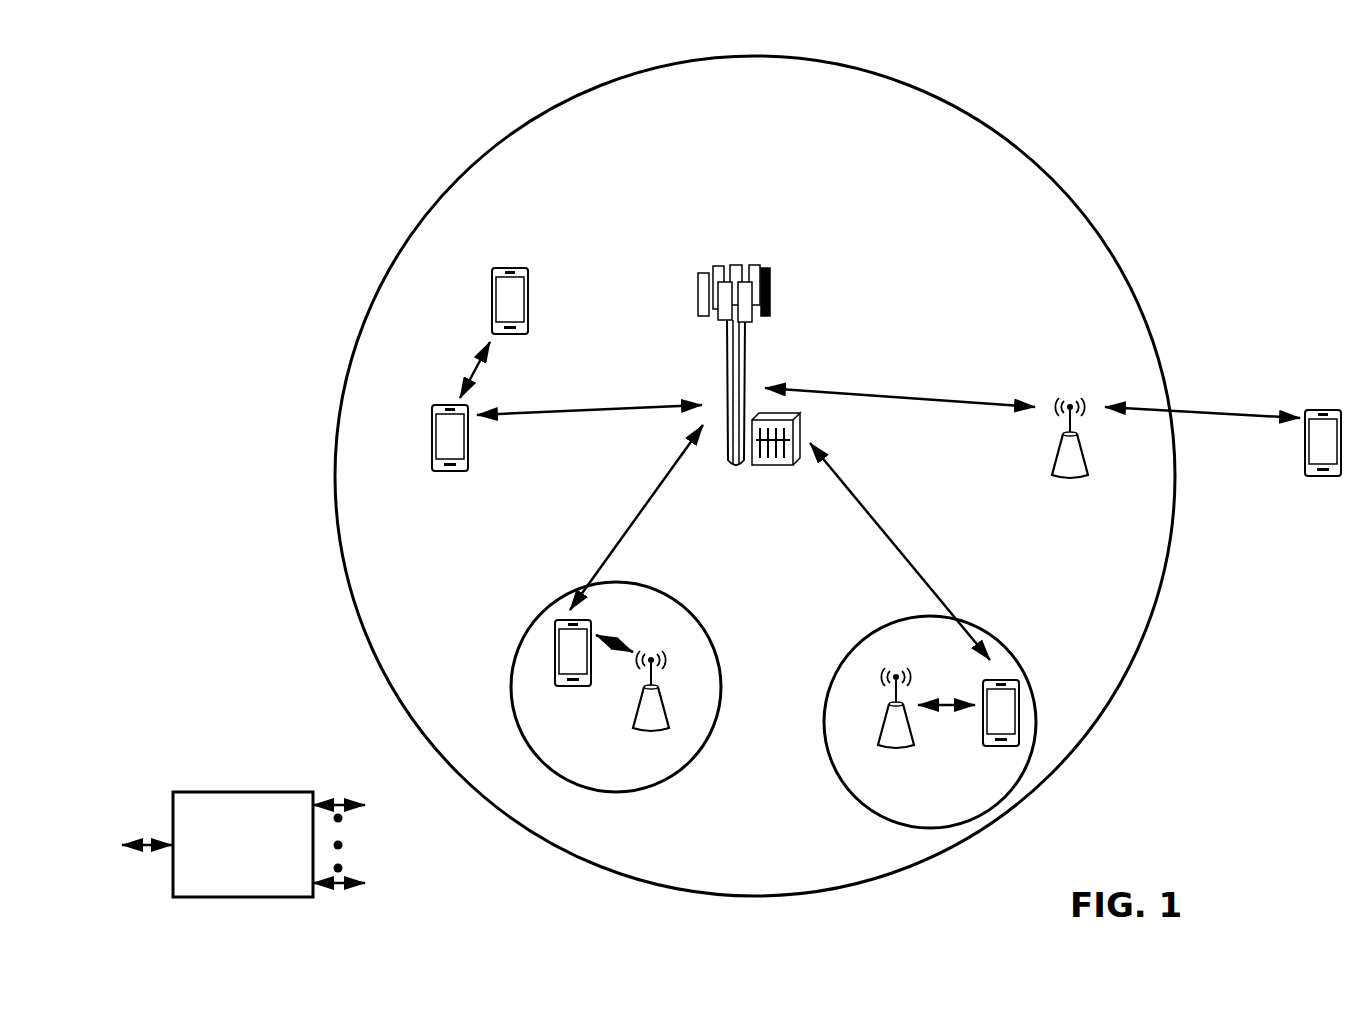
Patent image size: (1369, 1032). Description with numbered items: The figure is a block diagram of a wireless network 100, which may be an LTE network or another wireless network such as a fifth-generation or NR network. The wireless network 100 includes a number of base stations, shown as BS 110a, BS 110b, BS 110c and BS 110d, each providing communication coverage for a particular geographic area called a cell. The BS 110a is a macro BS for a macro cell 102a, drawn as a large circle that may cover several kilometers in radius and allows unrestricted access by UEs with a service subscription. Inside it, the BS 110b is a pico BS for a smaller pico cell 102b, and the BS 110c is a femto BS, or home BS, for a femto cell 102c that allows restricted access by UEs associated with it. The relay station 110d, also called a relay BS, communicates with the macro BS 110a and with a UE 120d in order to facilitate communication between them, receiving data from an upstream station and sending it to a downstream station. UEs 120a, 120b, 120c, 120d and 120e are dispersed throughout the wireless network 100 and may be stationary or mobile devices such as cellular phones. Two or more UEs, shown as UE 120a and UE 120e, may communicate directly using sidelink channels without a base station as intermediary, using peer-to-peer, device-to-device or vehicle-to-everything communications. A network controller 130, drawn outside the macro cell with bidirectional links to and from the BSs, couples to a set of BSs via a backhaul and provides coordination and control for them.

The wireless network 100 is at (226, 52).
The macro cell 102a is at (1034, 161).
The pico cell 102b is at (708, 628).
The femto cell 102c is at (845, 637).
The macro BS 110a is at (742, 258).
The pico BS 110b is at (672, 716).
The femto BS 110c is at (878, 730).
The relay station 110d is at (1072, 394).
The UE 120a is at (432, 440).
The UE 120b is at (557, 689).
The UE 120c is at (983, 750).
The UE 120d is at (1323, 410).
The UE 120e is at (492, 288).
The network controller 130 is at (243, 792).